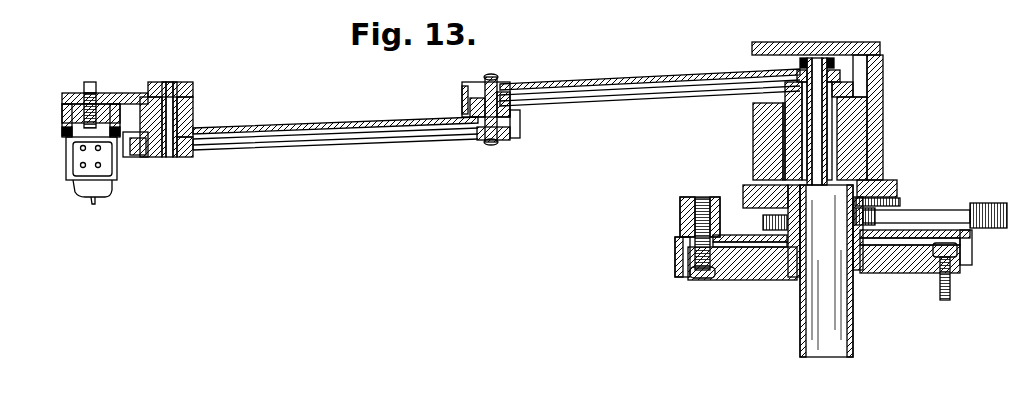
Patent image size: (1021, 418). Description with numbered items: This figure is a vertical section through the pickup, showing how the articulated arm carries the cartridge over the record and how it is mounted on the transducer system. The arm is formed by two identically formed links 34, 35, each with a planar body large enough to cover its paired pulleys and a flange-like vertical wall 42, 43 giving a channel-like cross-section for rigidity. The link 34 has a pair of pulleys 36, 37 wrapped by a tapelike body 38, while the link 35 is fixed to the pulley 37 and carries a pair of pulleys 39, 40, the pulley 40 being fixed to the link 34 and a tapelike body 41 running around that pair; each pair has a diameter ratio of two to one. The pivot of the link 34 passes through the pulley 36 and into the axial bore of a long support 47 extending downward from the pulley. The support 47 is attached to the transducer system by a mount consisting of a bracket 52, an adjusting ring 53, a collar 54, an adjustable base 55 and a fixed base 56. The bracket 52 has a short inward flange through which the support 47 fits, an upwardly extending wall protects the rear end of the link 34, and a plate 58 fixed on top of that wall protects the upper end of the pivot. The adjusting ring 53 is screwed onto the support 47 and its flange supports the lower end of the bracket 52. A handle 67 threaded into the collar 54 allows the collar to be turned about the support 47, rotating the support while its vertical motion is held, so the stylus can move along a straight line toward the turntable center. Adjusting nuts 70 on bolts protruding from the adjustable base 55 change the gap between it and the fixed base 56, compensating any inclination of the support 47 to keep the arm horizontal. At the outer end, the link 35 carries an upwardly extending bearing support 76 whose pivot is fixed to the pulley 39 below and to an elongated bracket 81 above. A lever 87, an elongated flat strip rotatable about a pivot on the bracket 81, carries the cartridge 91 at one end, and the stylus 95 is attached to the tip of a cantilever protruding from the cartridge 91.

The link 34 is at (652, 78).
The link 35 is at (331, 125).
The pulley 36 is at (852, 88).
The pulley 37 is at (500, 98).
The tapelike body 38 is at (657, 92).
The pulley 39 is at (191, 153).
The pulley 40 is at (502, 142).
The tapelike body 41 is at (318, 141).
The vertical wall 42 is at (462, 100).
The vertical wall 43 is at (520, 127).
The support 47 is at (853, 297).
The bracket 52 is at (878, 120).
The adjusting ring 53 is at (885, 183).
The collar 54 is at (763, 222).
The adjustable base 55 is at (675, 255).
The fixed base 56 is at (755, 274).
The plate 58 is at (830, 42).
The handle 67 is at (937, 217).
The adjusting nut 70 is at (690, 213).
The bearing support 76 is at (193, 113).
The bracket 81 is at (118, 93).
The lever 87 is at (66, 130).
The cartridge 91 is at (84, 171).
The stylus 95 is at (96, 202).